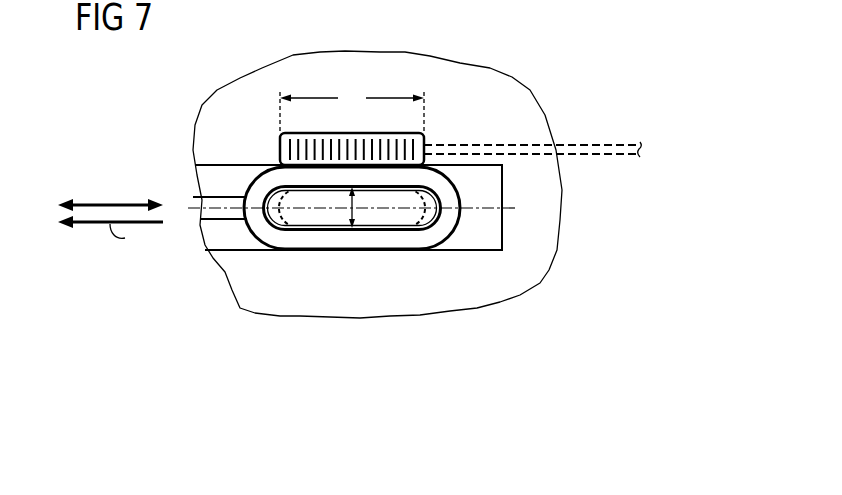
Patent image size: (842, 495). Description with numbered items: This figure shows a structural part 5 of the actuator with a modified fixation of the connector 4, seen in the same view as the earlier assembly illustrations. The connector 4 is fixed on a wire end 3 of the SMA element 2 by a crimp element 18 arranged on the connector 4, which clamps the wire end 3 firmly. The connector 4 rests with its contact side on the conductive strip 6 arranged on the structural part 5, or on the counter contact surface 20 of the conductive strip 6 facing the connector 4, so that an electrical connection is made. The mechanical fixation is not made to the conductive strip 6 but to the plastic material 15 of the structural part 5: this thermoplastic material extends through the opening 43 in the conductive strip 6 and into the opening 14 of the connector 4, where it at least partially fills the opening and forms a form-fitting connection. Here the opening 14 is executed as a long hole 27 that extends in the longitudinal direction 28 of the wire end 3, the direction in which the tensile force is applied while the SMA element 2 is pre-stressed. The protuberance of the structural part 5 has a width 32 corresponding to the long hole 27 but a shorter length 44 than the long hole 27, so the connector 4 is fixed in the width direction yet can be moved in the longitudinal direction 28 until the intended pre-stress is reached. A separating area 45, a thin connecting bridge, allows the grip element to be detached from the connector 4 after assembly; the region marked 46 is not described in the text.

The SMA element 2 is at (542, 98).
The wire end 3 is at (532, 98).
The connector 4 is at (255, 242).
The structural part 5 is at (495, 148).
The conductive strip 6 is at (488, 233).
The opening 14 is at (388, 192).
The plastic material 15 is at (322, 213).
The crimp element 18 is at (313, 152).
The counter contact surface 20 is at (402, 228).
The long hole 27 is at (388, 192).
The longitudinal direction 28 is at (115, 200).
The width 32 is at (356, 211).
The opening 43 is at (437, 218).
The length 44 is at (352, 109).
The separating area 45 is at (313, 261).
The channel 46 is at (222, 211).